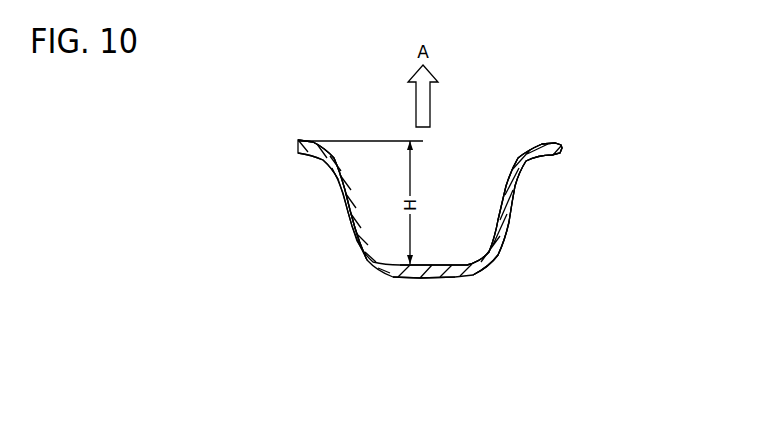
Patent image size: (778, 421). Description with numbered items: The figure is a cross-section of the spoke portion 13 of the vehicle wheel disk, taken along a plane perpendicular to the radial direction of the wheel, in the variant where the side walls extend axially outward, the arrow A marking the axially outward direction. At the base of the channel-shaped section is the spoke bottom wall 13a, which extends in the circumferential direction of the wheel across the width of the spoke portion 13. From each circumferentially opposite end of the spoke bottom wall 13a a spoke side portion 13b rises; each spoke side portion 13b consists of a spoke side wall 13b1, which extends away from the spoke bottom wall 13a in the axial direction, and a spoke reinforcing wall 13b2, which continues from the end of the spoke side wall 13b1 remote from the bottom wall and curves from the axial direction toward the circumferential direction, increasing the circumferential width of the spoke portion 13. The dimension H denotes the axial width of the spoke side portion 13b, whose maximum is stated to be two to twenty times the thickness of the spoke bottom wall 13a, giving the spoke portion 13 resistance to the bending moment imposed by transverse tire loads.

The spoke portion 13 is at (360, 262).
The spoke bottom wall 13a is at (423, 278).
The spoke side portion 13b is at (251, 180).
The spoke side wall 13b1 is at (352, 219).
The spoke reinforcing wall 13b2 is at (300, 154).